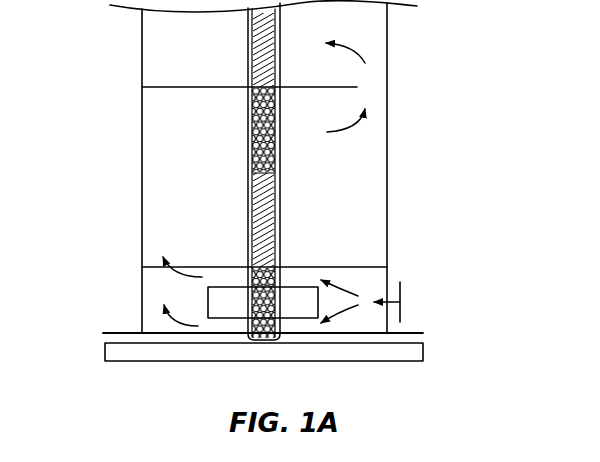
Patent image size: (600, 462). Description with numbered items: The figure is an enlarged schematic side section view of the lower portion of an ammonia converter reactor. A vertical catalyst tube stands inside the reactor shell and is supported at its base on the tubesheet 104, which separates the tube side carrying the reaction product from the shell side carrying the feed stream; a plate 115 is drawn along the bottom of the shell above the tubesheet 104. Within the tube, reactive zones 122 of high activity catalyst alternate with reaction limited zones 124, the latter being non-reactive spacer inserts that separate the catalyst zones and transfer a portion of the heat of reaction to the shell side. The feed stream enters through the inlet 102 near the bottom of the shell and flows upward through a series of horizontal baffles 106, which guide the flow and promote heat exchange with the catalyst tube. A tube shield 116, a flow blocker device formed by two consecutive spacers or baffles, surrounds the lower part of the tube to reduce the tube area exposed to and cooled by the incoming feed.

The inlet 102 is at (400, 290).
The tubesheet 104 is at (130, 362).
The baffles 106 is at (147, 86).
The bottom plate 115 is at (413, 333).
The tube shield 116 is at (208, 296).
The reactive zones 122 is at (251, 152).
The reaction limited zones 124 is at (252, 218).